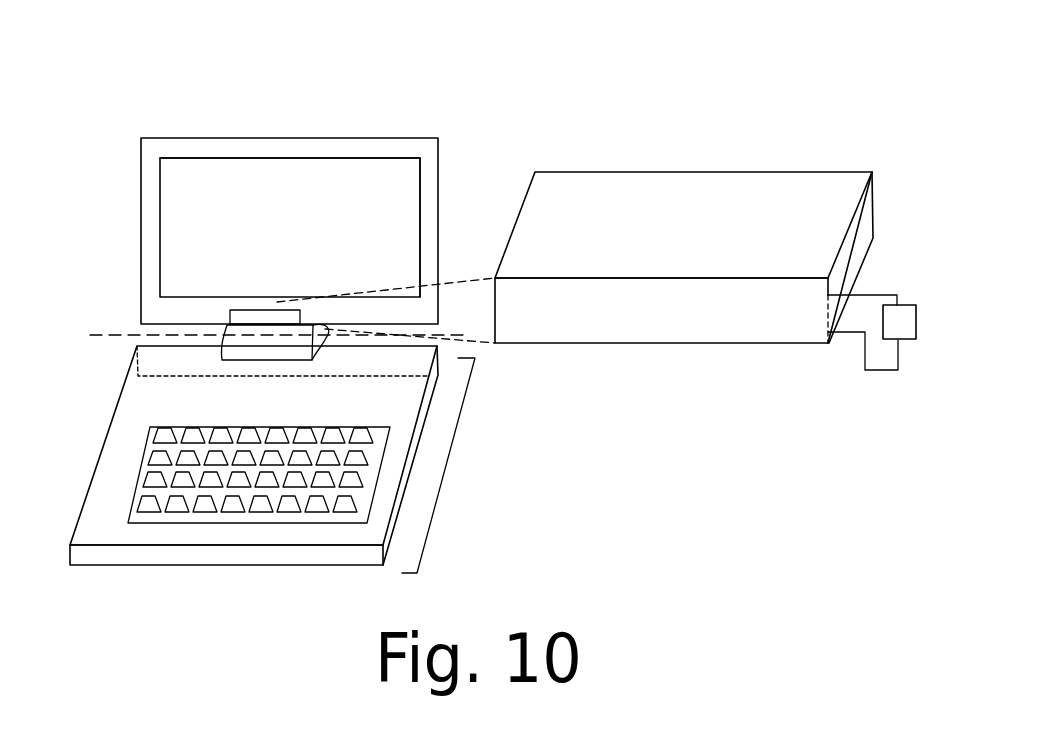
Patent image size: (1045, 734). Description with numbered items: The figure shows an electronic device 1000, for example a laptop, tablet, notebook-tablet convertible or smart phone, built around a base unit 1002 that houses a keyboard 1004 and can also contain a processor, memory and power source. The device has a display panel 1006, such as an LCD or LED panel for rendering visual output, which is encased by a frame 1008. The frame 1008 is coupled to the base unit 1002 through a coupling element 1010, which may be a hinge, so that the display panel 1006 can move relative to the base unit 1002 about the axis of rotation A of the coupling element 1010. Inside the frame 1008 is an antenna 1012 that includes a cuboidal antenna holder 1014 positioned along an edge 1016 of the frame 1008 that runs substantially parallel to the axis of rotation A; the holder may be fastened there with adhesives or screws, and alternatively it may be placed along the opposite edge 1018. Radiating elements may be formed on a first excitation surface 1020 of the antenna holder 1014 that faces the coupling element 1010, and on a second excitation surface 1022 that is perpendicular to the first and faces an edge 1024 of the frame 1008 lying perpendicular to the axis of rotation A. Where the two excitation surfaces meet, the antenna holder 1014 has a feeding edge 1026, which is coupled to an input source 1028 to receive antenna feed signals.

The electronic device 1000 is at (221, 90).
The base unit 1002 is at (448, 467).
The keyboard 1004 is at (142, 510).
The display panel 1006 is at (190, 211).
The frame 1008 is at (187, 151).
The coupling element 1010 is at (213, 327).
The antenna 1012 is at (275, 309).
The antenna holder 1014 is at (680, 143).
The edge 1016 is at (372, 323).
The edge 1018 is at (333, 157).
The first excitation surface 1020 is at (632, 327).
The second excitation surface 1022 is at (843, 255).
The edge 1024 is at (422, 183).
The feeding edge 1026 is at (830, 336).
The input source 1028 is at (905, 330).
The axis of rotation A is at (108, 335).